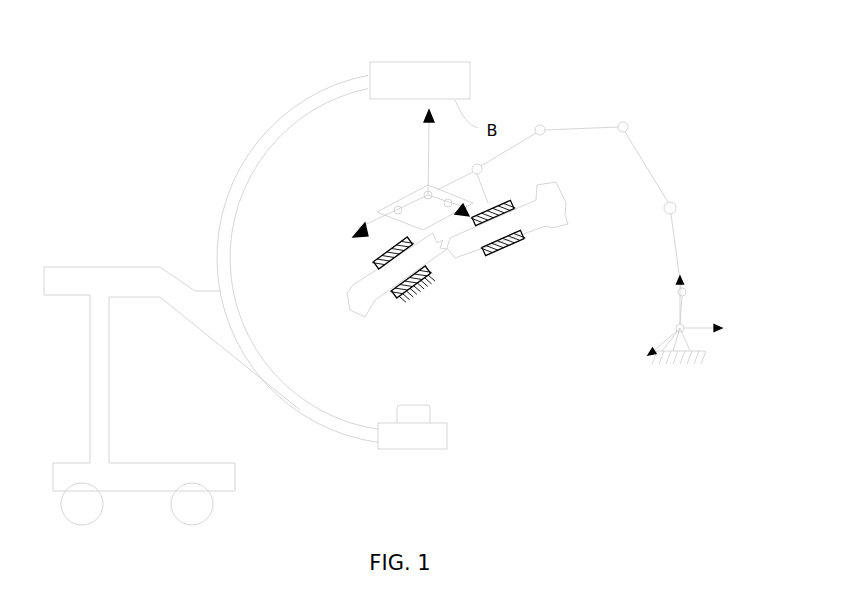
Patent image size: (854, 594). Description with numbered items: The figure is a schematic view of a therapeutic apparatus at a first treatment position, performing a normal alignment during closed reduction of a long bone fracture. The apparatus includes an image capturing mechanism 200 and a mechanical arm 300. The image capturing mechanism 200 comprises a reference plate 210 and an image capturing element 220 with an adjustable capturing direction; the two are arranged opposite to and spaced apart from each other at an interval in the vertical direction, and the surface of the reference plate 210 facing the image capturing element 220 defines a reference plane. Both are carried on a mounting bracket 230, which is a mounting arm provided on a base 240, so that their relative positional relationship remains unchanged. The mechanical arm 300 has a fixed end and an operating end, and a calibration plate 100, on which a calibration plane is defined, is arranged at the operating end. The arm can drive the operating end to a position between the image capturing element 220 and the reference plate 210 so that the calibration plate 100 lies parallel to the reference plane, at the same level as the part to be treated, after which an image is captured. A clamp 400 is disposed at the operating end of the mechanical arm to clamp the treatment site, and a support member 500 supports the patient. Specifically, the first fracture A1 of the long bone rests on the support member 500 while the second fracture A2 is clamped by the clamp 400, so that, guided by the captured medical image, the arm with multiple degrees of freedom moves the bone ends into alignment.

The calibration plate 100 is at (400, 192).
The image capturing mechanism 200 is at (222, 117).
The reference plate 210 is at (420, 70).
The image capturing element 220 is at (440, 436).
The mounting bracket 230 is at (238, 190).
The base 240 is at (100, 373).
The mechanical arm 300 is at (673, 180).
The clamp 400 is at (500, 203).
The support member 500 is at (430, 267).
The first fracture A1 is at (377, 303).
The second fracture A2 is at (548, 220).